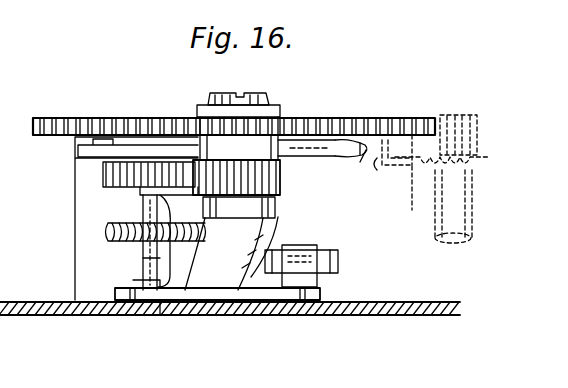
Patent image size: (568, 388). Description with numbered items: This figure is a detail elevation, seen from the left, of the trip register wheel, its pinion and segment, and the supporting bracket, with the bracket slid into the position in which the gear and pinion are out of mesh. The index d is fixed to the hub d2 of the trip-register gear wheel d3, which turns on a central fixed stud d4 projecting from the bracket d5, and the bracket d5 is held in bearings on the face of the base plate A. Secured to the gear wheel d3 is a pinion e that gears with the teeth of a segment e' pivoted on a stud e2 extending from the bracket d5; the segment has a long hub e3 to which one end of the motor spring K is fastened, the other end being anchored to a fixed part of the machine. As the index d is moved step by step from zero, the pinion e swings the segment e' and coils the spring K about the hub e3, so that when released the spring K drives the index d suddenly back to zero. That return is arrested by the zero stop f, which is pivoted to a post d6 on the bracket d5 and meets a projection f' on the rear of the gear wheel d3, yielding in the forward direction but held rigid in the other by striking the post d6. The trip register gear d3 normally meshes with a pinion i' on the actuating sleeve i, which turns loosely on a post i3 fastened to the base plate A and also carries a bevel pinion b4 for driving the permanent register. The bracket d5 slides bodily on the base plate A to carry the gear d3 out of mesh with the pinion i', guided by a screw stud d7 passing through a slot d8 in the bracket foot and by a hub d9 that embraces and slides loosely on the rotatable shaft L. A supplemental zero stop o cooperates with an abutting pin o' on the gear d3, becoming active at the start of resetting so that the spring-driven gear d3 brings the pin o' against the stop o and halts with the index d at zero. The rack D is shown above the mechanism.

The toothed rack bar D is at (234, 114).
The index d is at (204, 103).
The hub d2 is at (192, 117).
The trip-register gear wheel d3 is at (78, 118).
The central fixed stud d4 is at (218, 153).
The bracket d5 is at (231, 253).
The post d6 is at (75, 203).
The screw stud d7 is at (126, 283).
The slot d8 is at (167, 315).
The hub d9 is at (298, 245).
The pinion e is at (246, 189).
The segment e' is at (138, 178).
The stud e2 is at (143, 258).
The long hub e3 is at (143, 203).
The motor spring K is at (108, 232).
The rotatable shaft L is at (338, 262).
The base plate A is at (230, 297).
The zero stop f is at (344, 161).
The projection f' is at (355, 169).
The supplemental zero stop o is at (393, 175).
The abutting pin o' is at (411, 150).
The actuating sleeve i is at (463, 205).
The pinion i' is at (471, 135).
The post i3 is at (472, 238).
The bevel pinion b4 is at (492, 169).